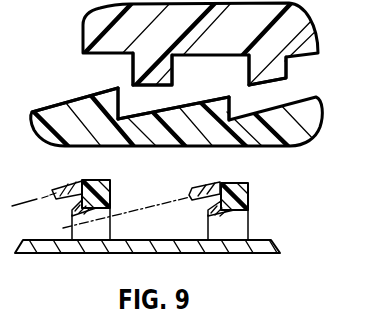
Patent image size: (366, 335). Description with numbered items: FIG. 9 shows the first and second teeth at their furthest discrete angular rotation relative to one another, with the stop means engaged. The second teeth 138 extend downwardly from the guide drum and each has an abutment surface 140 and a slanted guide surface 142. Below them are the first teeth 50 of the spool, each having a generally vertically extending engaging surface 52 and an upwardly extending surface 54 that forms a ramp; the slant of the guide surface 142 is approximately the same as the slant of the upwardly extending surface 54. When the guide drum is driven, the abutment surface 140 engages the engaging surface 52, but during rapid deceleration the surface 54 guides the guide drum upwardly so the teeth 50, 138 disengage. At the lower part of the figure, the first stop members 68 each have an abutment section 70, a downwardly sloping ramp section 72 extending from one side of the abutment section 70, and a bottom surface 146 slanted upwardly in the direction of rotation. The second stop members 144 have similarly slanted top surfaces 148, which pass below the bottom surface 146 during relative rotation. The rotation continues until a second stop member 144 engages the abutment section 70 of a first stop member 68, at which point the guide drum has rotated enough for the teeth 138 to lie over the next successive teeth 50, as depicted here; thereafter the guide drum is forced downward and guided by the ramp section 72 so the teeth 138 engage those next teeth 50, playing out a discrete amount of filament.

The second teeth 138 is at (188, 54).
The abutment surface 140 is at (133, 73).
The guide surface 142 is at (151, 81).
The upwardly extending surface 54 is at (40, 107).
The first teeth 50 is at (112, 102).
The engaging surface 52 is at (118, 103).
The ramp section 72 is at (72, 209).
The first stop members 68 is at (152, 196).
The abutment section 70 is at (82, 180).
The bottom surface 146 is at (110, 207).
The top surfaces 148 is at (65, 183).
The second stop members 144 is at (104, 198).